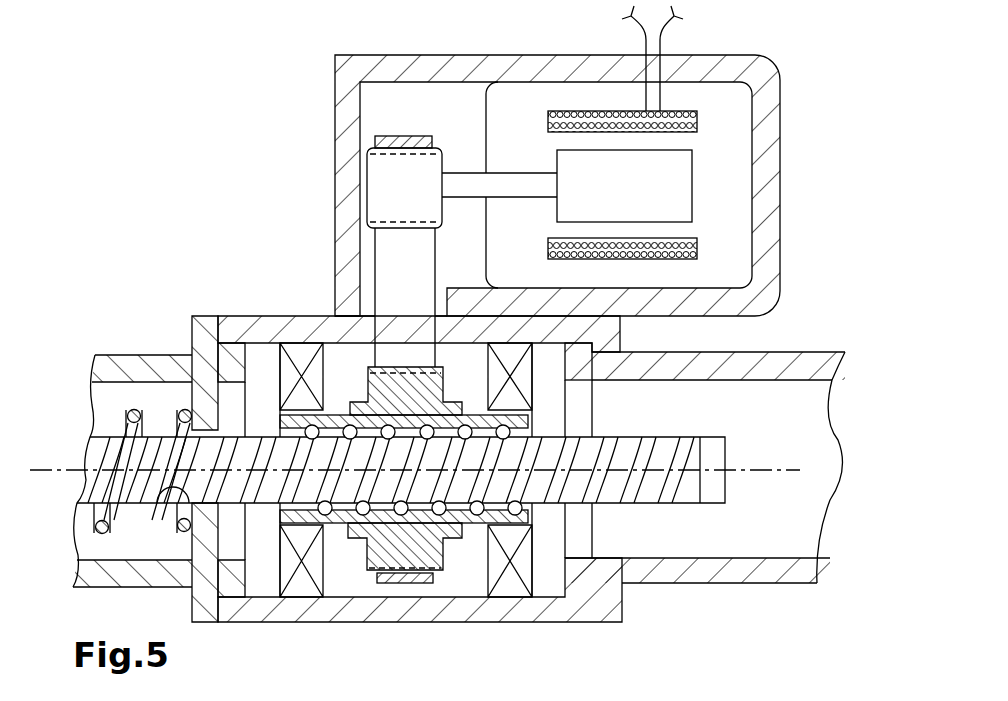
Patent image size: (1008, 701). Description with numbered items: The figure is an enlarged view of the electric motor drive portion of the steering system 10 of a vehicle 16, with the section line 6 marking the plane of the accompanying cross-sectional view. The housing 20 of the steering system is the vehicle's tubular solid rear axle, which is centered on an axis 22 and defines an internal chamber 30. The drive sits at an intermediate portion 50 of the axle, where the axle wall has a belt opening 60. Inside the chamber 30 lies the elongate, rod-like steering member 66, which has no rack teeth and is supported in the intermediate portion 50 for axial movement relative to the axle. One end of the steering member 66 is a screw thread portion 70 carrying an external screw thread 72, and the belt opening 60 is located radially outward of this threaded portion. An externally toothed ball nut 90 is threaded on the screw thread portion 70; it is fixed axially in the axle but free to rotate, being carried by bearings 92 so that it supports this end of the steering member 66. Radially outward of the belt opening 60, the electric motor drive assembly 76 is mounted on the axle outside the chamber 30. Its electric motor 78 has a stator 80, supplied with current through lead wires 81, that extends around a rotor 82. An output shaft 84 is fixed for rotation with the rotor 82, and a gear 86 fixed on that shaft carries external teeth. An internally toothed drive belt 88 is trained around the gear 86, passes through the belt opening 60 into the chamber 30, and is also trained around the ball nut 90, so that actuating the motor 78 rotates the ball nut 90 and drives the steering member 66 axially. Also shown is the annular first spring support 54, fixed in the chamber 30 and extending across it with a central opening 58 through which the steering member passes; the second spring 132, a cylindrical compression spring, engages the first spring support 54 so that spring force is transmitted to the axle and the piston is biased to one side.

The section line 6- 6 is at (403, 40).
The steering system 10 is at (224, 197).
The vehicle 16 is at (184, 149).
The housing 20 is at (784, 339).
The axis 22 is at (772, 460).
The internal chamber 30 is at (767, 530).
The intermediate portion 50 is at (845, 362).
The first spring support 54 is at (206, 548).
The central opening 58 is at (167, 522).
The belt opening 60 is at (368, 330).
The steering member 66 is at (733, 489).
The screw thread portion 70 is at (705, 503).
The external screw thread 72 is at (647, 480).
The electric motor drive assembly 76 is at (250, 243).
The electric motor 78 is at (744, 185).
The stator 80 is at (700, 250).
The lead wires 81 is at (661, 48).
The rotor 82 is at (678, 177).
The output shaft 84 is at (463, 187).
The gear 86 is at (388, 183).
The drive belt 88 is at (400, 268).
The ball nut 90 is at (385, 545).
The bearings 92 is at (302, 580).
The second spring 132 is at (127, 418).